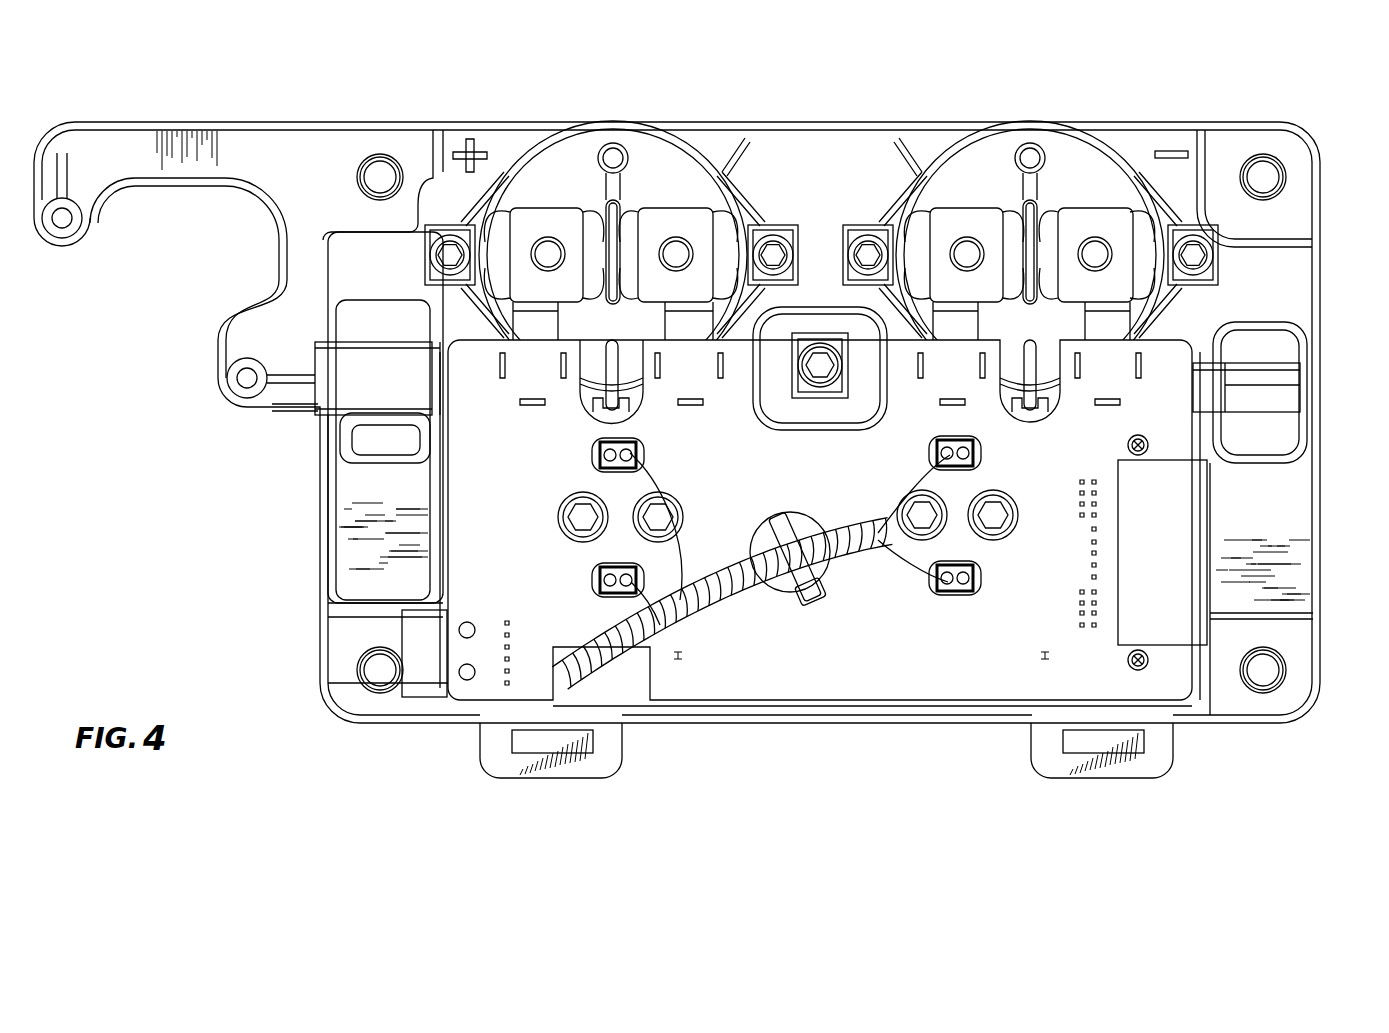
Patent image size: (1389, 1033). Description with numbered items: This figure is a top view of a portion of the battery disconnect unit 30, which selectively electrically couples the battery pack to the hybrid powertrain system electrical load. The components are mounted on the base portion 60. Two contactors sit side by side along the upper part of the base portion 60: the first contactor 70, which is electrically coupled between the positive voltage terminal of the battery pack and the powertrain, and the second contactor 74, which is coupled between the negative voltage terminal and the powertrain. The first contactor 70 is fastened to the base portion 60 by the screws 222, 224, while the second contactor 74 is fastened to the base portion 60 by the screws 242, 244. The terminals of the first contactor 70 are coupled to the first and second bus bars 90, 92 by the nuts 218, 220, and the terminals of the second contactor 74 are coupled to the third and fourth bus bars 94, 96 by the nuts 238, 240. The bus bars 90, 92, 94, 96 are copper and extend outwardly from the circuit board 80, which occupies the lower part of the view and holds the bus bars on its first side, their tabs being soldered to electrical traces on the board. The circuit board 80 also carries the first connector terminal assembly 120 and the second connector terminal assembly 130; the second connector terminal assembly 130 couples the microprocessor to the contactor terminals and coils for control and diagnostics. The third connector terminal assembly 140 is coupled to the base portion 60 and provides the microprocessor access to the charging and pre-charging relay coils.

The battery disconnect unit 30 is at (1222, 84).
The base portion 60 is at (1318, 680).
The first contactor 70 is at (572, 127).
The second contactor 74 is at (985, 132).
The circuit board 80 is at (862, 683).
The first bus bar 90 is at (547, 215).
The second bus bar 92 is at (655, 213).
The third bus bar 94 is at (947, 215).
The fourth bus bar 96 is at (1075, 213).
The first connector terminal assembly 120 is at (420, 672).
The second connector terminal assembly 130 is at (1178, 517).
The third connector terminal assembly 140 is at (332, 395).
The nut 218 is at (547, 250).
The nut 220 is at (677, 247).
The screw 222 is at (445, 253).
The screw 224 is at (773, 253).
The nut 238 is at (967, 250).
The nut 240 is at (1095, 247).
The screw 242 is at (868, 252).
The screw 244 is at (1195, 252).